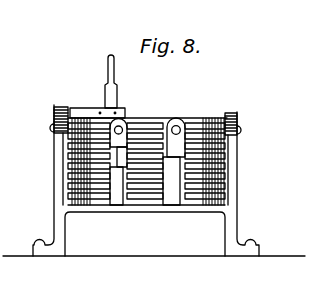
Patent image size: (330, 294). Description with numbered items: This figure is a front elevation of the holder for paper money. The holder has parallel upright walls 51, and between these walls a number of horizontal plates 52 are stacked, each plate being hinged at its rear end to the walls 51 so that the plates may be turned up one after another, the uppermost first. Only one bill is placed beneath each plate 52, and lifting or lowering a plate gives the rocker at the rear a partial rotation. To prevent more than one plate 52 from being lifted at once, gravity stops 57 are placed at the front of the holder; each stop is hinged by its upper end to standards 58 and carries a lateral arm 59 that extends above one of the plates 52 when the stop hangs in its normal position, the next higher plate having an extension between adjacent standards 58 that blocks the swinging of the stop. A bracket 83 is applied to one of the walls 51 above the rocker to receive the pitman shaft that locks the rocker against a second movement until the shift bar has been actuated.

The upright walls 51 is at (62, 173).
The horizontal plates 52 is at (145, 128).
The gravity stops 57 is at (196, 120).
The standards 58 is at (178, 122).
The lateral arms 59 is at (152, 193).
The bracket 83 is at (97, 118).